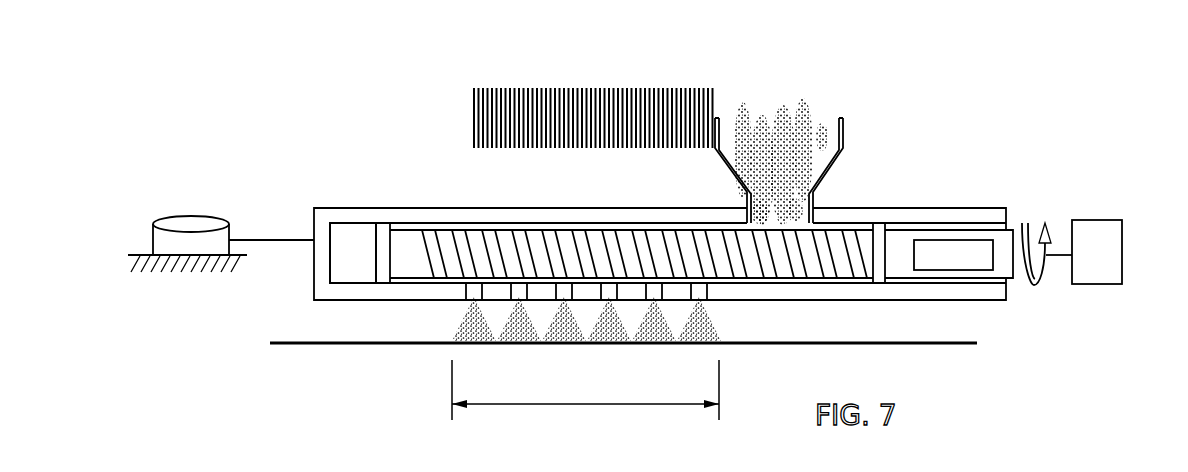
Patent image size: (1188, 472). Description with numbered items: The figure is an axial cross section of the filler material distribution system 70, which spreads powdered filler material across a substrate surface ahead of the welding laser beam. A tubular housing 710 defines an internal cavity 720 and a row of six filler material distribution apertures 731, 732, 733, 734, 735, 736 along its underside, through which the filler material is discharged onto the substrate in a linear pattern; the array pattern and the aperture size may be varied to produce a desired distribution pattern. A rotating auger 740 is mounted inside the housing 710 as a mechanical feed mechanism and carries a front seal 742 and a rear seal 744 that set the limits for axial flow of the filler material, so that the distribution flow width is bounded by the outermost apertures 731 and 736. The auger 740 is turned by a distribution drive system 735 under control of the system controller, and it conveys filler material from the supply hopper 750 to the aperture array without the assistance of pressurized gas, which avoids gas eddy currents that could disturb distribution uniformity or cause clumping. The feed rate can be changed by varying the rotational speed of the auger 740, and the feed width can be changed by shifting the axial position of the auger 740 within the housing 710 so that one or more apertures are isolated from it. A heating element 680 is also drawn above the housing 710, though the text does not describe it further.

The filler material distribution system 70 is at (1072, 102).
The heater 680 is at (694, 96).
The supply hopper 750 is at (852, 122).
The internal cavity 720 is at (357, 231).
The housing 710 is at (314, 270).
The rotating auger 740 is at (1013, 228).
The front seal 742 is at (381, 284).
The rear seal 744 is at (882, 284).
The filler material distribution aperture 731 is at (466, 295).
The filler material distribution aperture 732 is at (507, 343).
The filler material distribution aperture 733 is at (557, 343).
The filler material distribution aperture 734 is at (628, 345).
The distribution drive system 735 is at (699, 344).
The filler material distribution aperture 736 is at (657, 298).